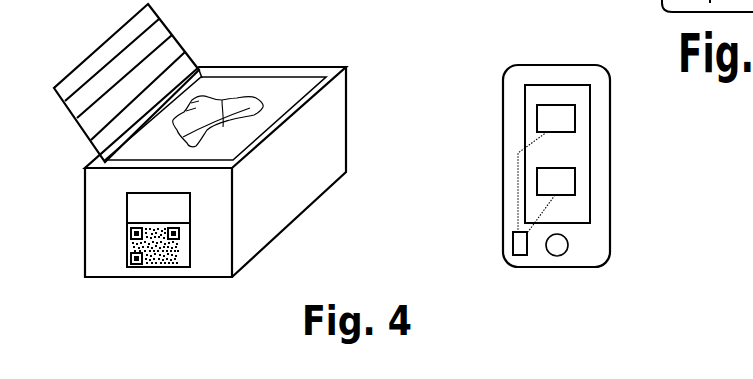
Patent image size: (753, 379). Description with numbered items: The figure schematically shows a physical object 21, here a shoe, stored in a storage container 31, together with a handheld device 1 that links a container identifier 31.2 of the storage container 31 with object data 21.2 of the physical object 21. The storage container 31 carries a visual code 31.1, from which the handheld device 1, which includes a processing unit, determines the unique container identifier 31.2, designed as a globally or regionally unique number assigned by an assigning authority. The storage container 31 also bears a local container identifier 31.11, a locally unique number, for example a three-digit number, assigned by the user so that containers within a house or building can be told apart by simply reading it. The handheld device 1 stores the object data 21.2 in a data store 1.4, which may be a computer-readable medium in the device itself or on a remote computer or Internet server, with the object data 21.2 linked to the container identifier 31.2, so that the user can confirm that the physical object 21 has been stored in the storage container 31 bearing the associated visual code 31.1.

The handheld device 1 is at (598, 200).
The data store 1.4 is at (513, 245).
The physical object 21 is at (243, 107).
The object data 21.2 is at (575, 182).
The storage container 31 is at (313, 187).
The visual code 31.1 is at (184, 248).
The local container identifier 31.11 is at (187, 218).
The container identifier 31.2 is at (537, 118).